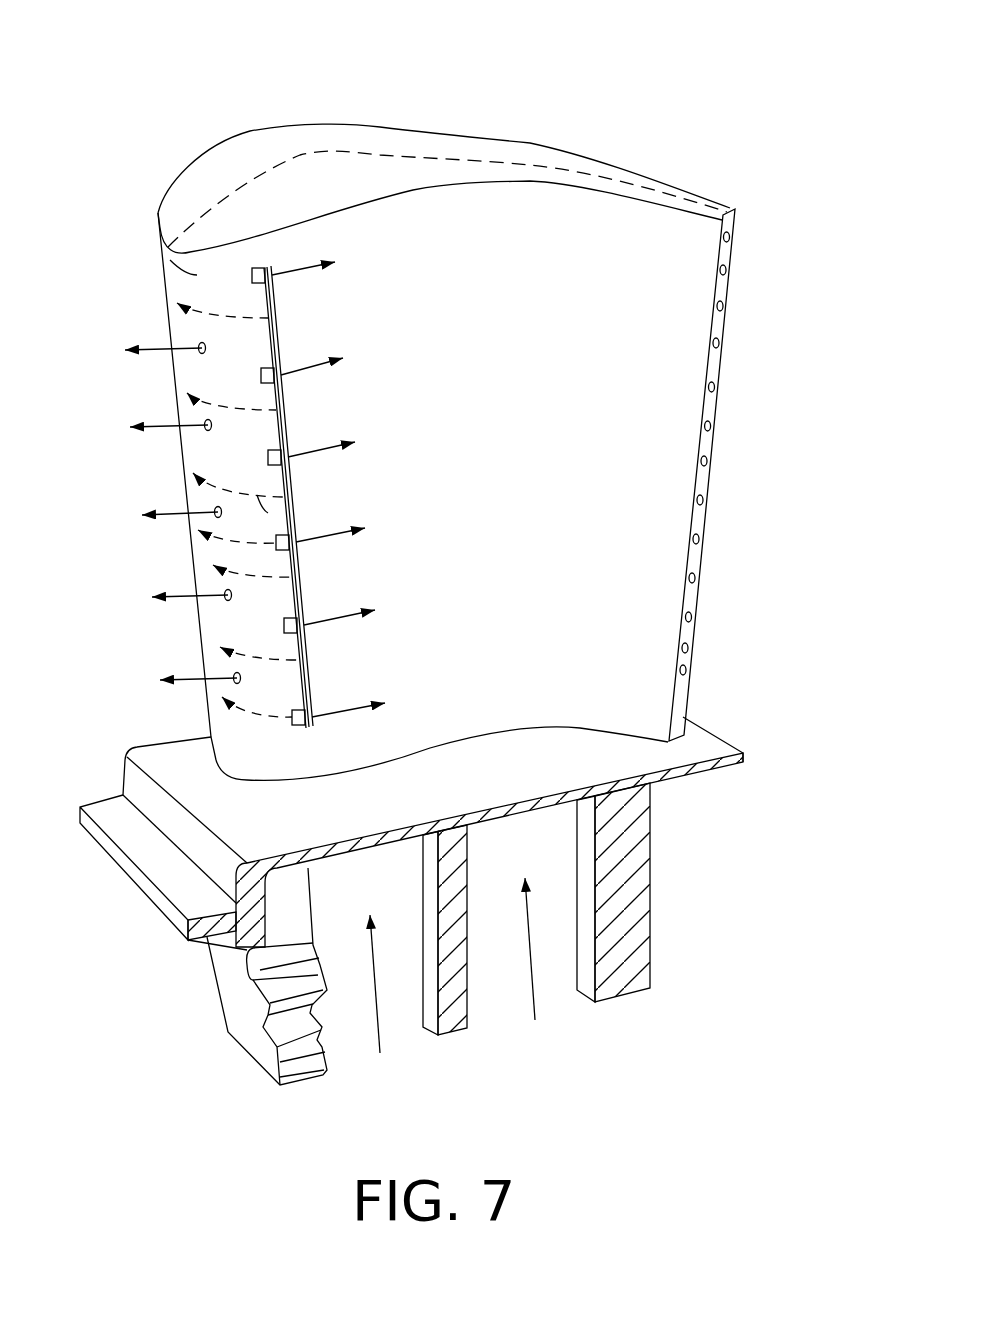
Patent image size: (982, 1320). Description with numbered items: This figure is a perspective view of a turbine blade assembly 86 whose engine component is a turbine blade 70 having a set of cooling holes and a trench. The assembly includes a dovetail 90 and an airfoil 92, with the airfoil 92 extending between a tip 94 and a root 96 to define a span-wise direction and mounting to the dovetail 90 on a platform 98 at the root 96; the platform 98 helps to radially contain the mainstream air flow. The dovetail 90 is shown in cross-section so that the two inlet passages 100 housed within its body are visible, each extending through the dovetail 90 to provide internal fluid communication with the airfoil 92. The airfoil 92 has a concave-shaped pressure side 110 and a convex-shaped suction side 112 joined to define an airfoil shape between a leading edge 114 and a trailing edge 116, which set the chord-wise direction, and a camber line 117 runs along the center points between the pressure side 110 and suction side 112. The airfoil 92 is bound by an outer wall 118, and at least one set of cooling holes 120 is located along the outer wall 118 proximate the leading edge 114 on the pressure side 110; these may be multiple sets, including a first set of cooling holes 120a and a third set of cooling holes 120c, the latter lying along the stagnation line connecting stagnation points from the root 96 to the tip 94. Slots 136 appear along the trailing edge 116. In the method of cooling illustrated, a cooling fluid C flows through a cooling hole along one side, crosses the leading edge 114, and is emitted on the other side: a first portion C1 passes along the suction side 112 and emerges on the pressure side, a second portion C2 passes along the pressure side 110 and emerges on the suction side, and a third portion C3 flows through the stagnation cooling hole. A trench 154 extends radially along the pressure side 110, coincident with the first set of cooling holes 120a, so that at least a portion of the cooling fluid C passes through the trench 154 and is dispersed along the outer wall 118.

The turbine blade assembly 86 is at (655, 78).
The airfoil 92 is at (288, 122).
The tip 94 is at (233, 185).
The turbine blade 70 is at (550, 227).
The suction side 112 is at (477, 133).
The pressure side 110 is at (373, 203).
The camber line 117 is at (333, 153).
The leading edge 114 is at (162, 247).
The trailing edge 116 is at (735, 222).
The trailing edge cooling slots 136 is at (773, 499).
The outer wall 118 is at (472, 533).
The trench 154 is at (275, 408).
The set of cooling holes 120 is at (213, 340).
The first set of cooling holes 120a is at (293, 610).
The third set of cooling holes 120c is at (213, 518).
The root 96 is at (643, 733).
The platform 98 is at (172, 758).
The dovetail 90 is at (228, 1003).
The inlet passage 100 is at (403, 1052).
The cooling fluid C is at (530, 967).
The first portion of the cooling fluid C1 is at (297, 520).
The second portion of the cooling fluid C2 is at (252, 275).
The third portion of the cooling fluid C3 is at (168, 423).